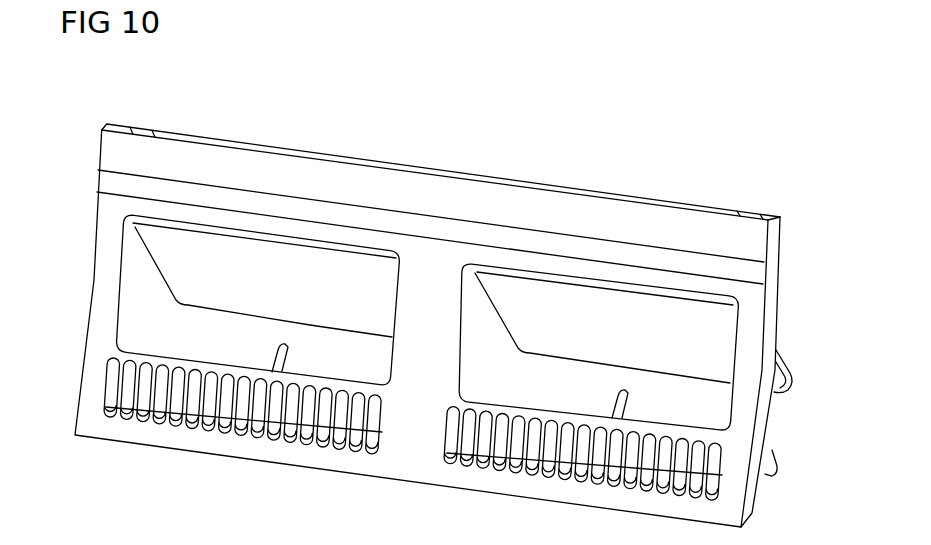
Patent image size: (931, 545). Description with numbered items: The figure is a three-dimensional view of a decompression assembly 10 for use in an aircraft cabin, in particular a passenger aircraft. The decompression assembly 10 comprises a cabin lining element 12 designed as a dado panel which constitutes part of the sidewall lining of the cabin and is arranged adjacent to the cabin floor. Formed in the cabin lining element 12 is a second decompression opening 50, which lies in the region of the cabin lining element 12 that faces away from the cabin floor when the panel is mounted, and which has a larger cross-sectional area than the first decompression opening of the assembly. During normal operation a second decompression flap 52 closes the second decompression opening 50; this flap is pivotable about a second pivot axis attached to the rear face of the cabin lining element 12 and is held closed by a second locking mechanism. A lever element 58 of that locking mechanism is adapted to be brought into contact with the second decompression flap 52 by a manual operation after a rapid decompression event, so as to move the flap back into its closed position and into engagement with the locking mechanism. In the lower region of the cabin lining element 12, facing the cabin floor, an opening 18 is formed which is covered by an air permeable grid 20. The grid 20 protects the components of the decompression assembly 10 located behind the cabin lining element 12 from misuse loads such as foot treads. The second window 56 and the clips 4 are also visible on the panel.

The decompression assembly 10 is at (431, 141).
The cabin lining element 12 is at (225, 155).
The second decompression opening 50 is at (130, 292).
The second decompression flap 52 is at (233, 306).
The second window 56 is at (598, 347).
The lever element 58 is at (610, 407).
The opening 18 is at (292, 430).
The air permeable grid 20 is at (490, 467).
The mounting clips 4 is at (770, 457).